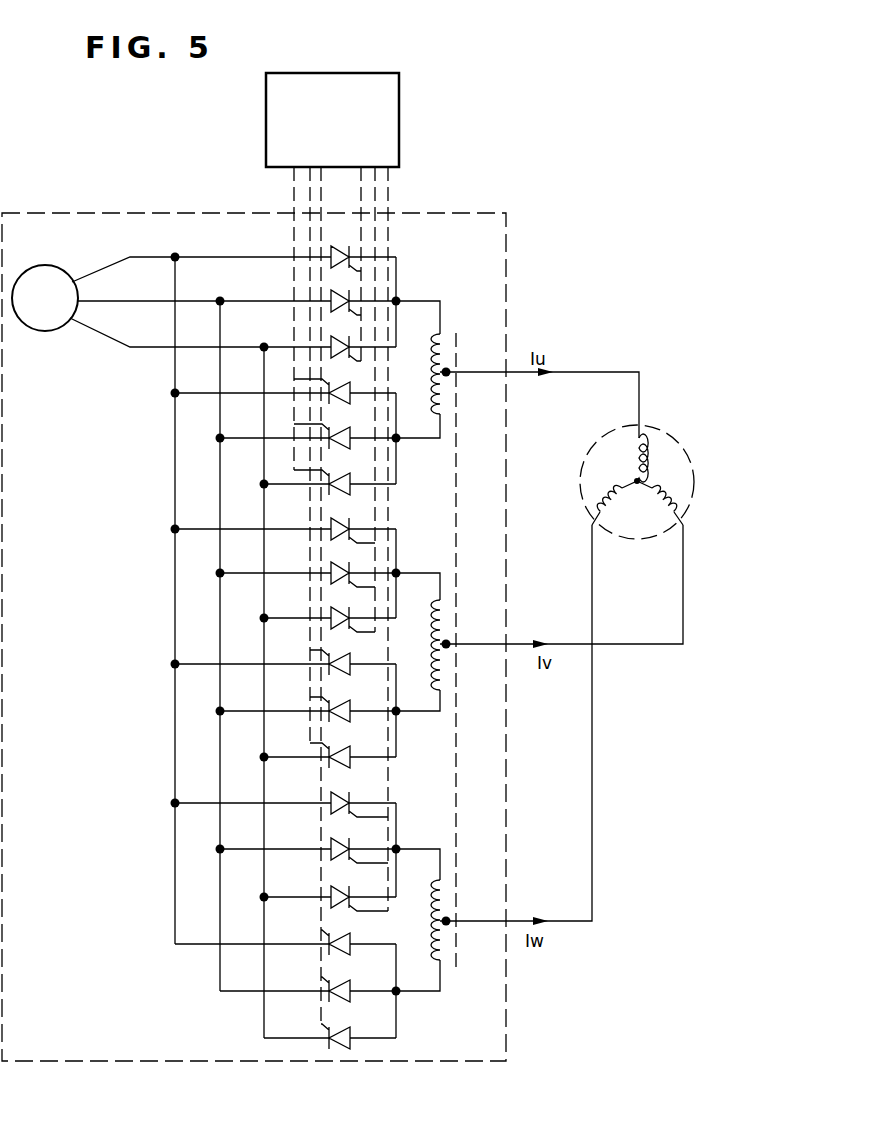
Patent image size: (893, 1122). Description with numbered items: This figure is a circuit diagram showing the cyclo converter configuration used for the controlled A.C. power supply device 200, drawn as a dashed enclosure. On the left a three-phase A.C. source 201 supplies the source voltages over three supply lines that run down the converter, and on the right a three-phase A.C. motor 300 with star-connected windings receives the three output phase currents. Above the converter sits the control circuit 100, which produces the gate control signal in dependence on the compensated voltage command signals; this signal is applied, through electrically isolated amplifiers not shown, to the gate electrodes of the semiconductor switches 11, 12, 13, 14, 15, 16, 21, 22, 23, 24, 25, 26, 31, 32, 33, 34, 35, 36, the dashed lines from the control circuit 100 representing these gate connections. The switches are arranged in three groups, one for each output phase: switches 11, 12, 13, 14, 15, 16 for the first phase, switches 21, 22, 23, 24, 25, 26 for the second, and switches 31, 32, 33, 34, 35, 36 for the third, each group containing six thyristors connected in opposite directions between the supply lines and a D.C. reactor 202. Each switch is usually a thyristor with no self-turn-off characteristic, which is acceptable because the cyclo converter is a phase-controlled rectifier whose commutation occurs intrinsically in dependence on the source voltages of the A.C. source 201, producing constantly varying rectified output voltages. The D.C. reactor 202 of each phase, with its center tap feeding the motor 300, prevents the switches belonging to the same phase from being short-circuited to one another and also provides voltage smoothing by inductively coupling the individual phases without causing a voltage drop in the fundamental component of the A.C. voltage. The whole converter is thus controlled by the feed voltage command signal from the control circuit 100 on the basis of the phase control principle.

The control circuit 100 is at (399, 130).
The controlled A.C. power supply device 200 is at (508, 258).
The three-phase A.C. source 201 is at (45, 331).
The D.C. reactor 202 is at (442, 416).
The three-phase A.C. motor 300 is at (589, 452).
The semiconductor switch 11 is at (315, 252).
The semiconductor switch 12 is at (314, 296).
The semiconductor switch 13 is at (314, 342).
The semiconductor switch 14 is at (309, 387).
The semiconductor switch 15 is at (309, 432).
The semiconductor switch 16 is at (309, 478).
The semiconductor switch 21 is at (321, 524).
The semiconductor switch 22 is at (321, 568).
The semiconductor switch 23 is at (321, 613).
The semiconductor switch 24 is at (309, 658).
The semiconductor switch 25 is at (309, 705).
The semiconductor switch 26 is at (309, 751).
The semiconductor switch 31 is at (328, 798).
The semiconductor switch 32 is at (328, 844).
The semiconductor switch 33 is at (328, 892).
The semiconductor switch 34 is at (309, 938).
The semiconductor switch 35 is at (309, 985).
The semiconductor switch 36 is at (309, 1032).